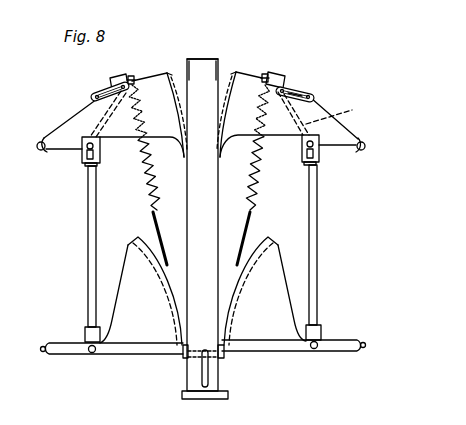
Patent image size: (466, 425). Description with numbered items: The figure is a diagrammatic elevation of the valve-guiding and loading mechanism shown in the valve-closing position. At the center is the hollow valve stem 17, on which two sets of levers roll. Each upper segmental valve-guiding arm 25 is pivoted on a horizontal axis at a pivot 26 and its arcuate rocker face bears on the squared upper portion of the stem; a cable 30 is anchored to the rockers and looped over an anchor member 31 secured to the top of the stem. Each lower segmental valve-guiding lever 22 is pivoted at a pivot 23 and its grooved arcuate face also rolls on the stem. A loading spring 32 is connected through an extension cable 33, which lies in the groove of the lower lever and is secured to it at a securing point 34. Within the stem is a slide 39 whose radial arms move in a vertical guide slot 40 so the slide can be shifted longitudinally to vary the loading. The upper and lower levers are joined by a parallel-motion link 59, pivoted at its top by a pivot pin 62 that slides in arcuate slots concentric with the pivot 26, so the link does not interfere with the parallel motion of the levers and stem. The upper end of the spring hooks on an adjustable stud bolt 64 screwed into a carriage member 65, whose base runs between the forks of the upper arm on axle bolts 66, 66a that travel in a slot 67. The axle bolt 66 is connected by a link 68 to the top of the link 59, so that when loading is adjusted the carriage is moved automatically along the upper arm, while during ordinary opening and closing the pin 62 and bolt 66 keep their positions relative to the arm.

The valve stem 17 is at (190, 195).
The segmental valve-guiding lever 22 is at (203, 291).
The pivot 23 is at (43, 357).
The segmental valve-guiding arm 25 is at (80, 114).
The pivot 26 is at (42, 152).
The cable 30 is at (177, 72).
The anchor member 31 is at (219, 60).
The loading spring 32 is at (148, 196).
The extension cable 33 is at (248, 238).
The cable securing point 34 is at (183, 352).
The slide 39 is at (216, 362).
The guide slot 40 is at (203, 374).
The link 59 is at (88, 238).
The pivot pin 62 is at (84, 152).
The adjustable stud bolt 64 is at (131, 76).
The carriage member 65 is at (112, 78).
The axle bolt 66 is at (286, 90).
The axle bolt 66a is at (300, 94).
The slot 67 is at (312, 98).
The link 68 is at (332, 122).